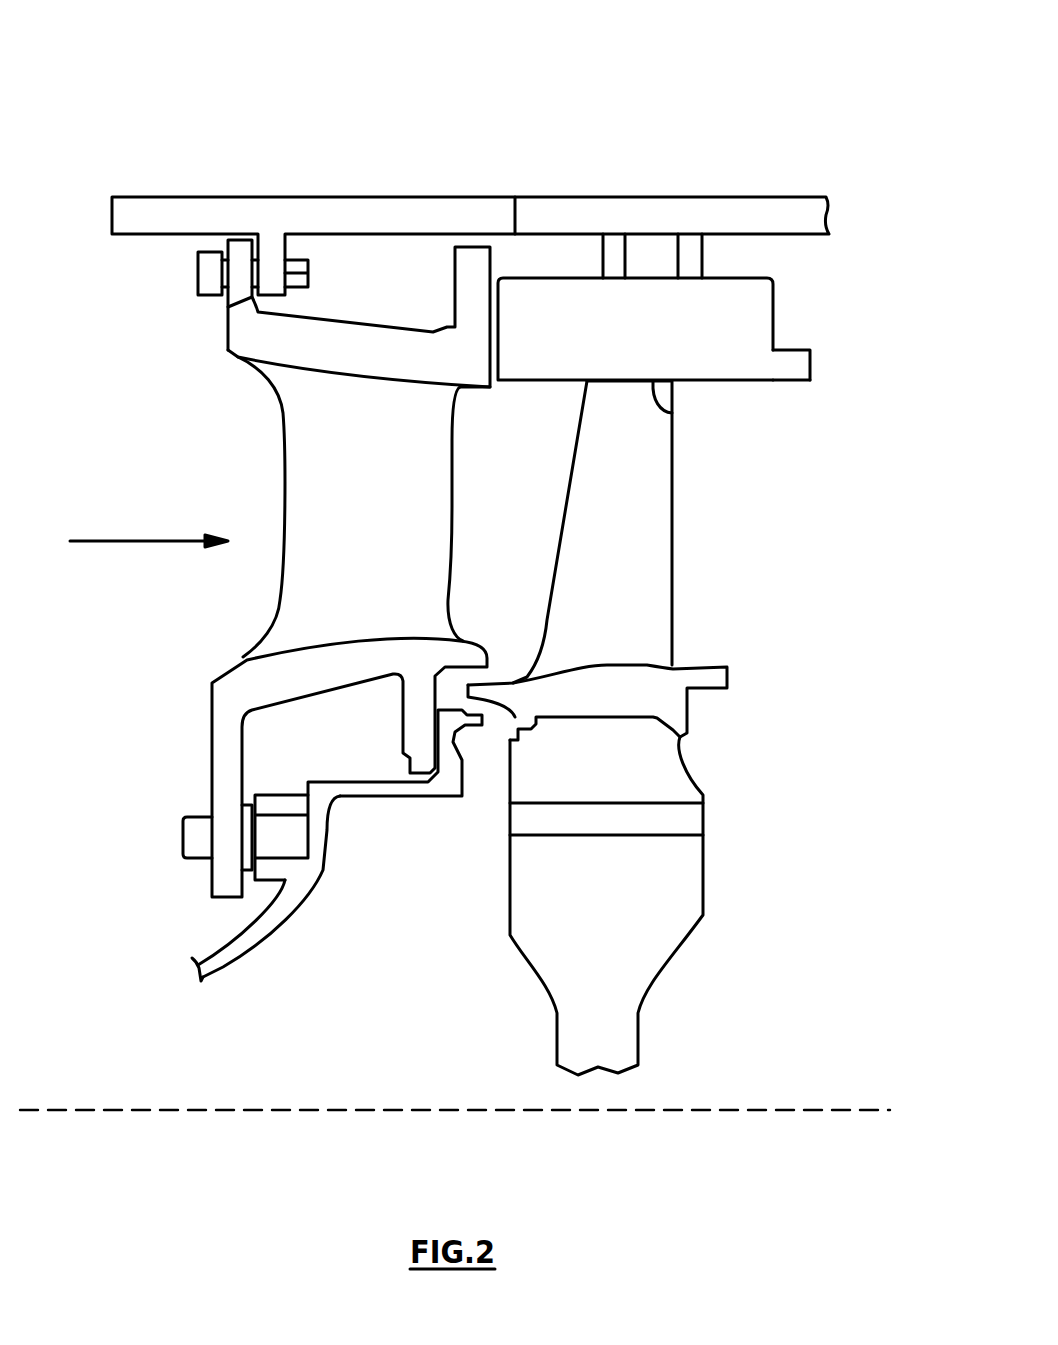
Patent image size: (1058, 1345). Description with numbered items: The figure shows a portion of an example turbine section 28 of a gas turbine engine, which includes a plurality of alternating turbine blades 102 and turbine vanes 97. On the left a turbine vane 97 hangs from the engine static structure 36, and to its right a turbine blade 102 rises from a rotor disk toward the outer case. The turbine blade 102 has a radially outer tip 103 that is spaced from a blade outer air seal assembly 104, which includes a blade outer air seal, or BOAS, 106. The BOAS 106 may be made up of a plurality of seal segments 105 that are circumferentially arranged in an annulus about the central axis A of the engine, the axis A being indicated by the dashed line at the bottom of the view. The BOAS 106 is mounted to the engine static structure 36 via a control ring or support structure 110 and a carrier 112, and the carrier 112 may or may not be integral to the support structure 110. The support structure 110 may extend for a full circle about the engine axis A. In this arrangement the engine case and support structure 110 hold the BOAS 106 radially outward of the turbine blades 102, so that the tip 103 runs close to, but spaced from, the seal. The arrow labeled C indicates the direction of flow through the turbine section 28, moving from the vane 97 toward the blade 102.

The turbine section 28 is at (748, 91).
The engine static structure 36 is at (178, 216).
The turbine vane 97 is at (458, 360).
The turbine blade 102 is at (607, 560).
The radially outer tip 103 is at (655, 387).
The blade outer air seal assembly 104 is at (712, 332).
The seal segment 105 is at (797, 358).
The blade outer air seal 106 is at (795, 370).
The support structure 110 is at (559, 210).
The carrier 112 is at (615, 258).
The core flow direction C is at (92, 524).
The central axis A is at (821, 1113).